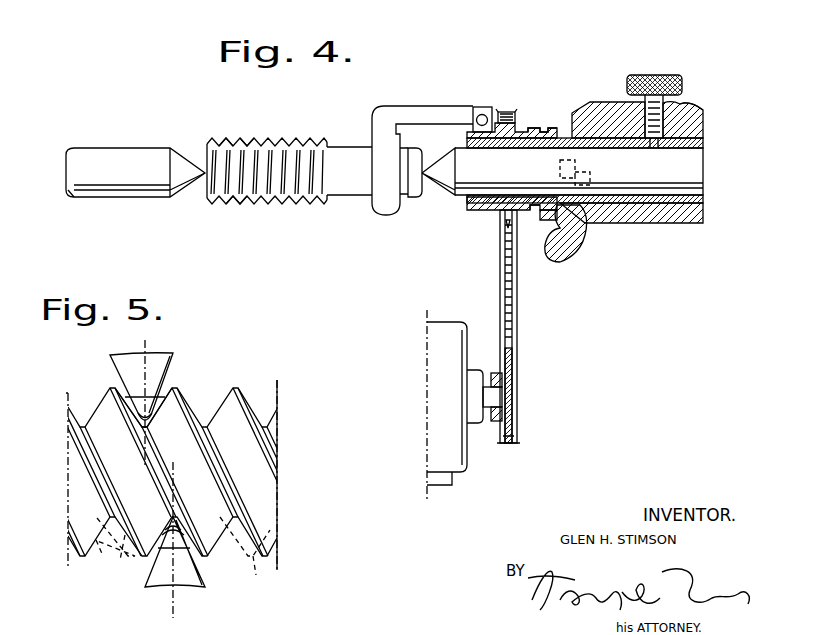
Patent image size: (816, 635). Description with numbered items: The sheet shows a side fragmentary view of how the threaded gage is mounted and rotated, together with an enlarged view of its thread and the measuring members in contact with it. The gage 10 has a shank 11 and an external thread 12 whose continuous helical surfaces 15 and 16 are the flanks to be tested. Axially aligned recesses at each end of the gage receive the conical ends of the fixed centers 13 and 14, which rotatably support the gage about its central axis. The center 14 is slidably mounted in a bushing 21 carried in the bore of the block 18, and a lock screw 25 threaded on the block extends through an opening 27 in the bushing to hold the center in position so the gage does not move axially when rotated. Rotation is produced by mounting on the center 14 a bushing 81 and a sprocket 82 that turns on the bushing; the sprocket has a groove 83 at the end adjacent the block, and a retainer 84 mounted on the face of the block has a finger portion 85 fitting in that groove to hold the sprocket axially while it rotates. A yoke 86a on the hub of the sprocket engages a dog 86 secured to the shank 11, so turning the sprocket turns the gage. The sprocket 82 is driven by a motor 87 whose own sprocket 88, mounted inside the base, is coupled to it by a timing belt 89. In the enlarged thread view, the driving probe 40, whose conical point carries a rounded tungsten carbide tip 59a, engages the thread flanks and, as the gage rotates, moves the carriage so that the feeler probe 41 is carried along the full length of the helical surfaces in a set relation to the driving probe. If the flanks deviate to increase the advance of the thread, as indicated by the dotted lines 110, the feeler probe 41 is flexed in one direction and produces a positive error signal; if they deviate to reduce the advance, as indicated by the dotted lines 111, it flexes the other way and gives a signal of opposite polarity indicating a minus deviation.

In FIG. 4, the gage 10 is at (271, 127).
In FIG. 4, the shank 11 is at (345, 196).
In FIG. 4, the external thread 12 is at (240, 206).
In FIG. 4, the fixed center 13 is at (121, 162).
In FIG. 4, the fixed center 14 is at (458, 196).
In FIG. 4, the helical surface 15 is at (222, 137).
In FIG. 4, the helical surface 16 is at (246, 137).
In FIG. 4, the block 18 is at (592, 110).
In FIG. 4, the bushing 21 is at (604, 203).
In FIG. 4, the lock screw 25 is at (652, 76).
In FIG. 4, the opening 27 is at (690, 107).
In FIG. 5, the driving probe 40 is at (163, 367).
In FIG. 5, the feeler probe 41 is at (195, 575).
In FIG. 5, the rounded tungsten carbide tip 59a is at (130, 405).
In FIG. 4, the bushing 81 is at (531, 133).
In FIG. 4, the sprocket 82 is at (510, 128).
In FIG. 4, the groove 83 is at (552, 132).
In FIG. 4, the retainer 84 is at (560, 215).
In FIG. 4, the finger portion 85 is at (530, 214).
In FIG. 4, the dog 86 is at (398, 112).
In FIG. 4, the yoke 86a is at (483, 106).
In FIG. 4, the motor 87 is at (440, 346).
In FIG. 4, the sprocket 88 is at (518, 410).
In FIG. 4, the timing belt 89 is at (518, 332).
In FIG. 5, the dotted lines 110 is at (118, 556).
In FIG. 5, the dotted lines 111 is at (252, 558).